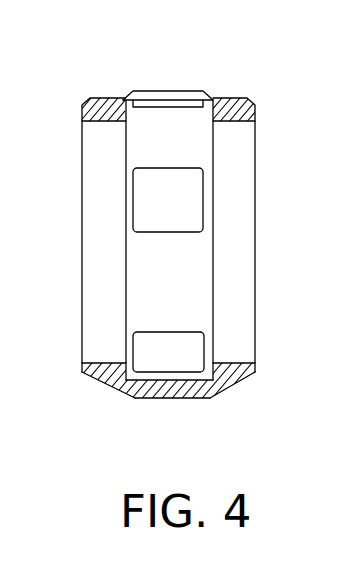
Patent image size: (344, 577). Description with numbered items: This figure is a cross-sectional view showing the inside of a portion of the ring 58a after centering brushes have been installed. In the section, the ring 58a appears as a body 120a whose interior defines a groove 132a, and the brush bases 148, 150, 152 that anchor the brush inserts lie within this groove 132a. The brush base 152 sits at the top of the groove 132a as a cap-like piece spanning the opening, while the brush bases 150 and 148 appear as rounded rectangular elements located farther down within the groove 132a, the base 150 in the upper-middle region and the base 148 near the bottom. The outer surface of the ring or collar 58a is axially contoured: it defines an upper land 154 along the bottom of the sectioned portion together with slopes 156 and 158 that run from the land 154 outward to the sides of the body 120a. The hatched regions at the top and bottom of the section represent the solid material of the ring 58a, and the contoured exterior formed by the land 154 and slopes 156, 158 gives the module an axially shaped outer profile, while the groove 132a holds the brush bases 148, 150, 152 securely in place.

The ring 58a is at (158, 414).
The housing body 120a is at (258, 277).
The groove 132a is at (142, 132).
The brush base 148 is at (193, 355).
The brush base 150 is at (194, 203).
The brush base 152 is at (180, 98).
The upper land 154 is at (183, 402).
The slope 156 is at (226, 390).
The slope 158 is at (103, 387).